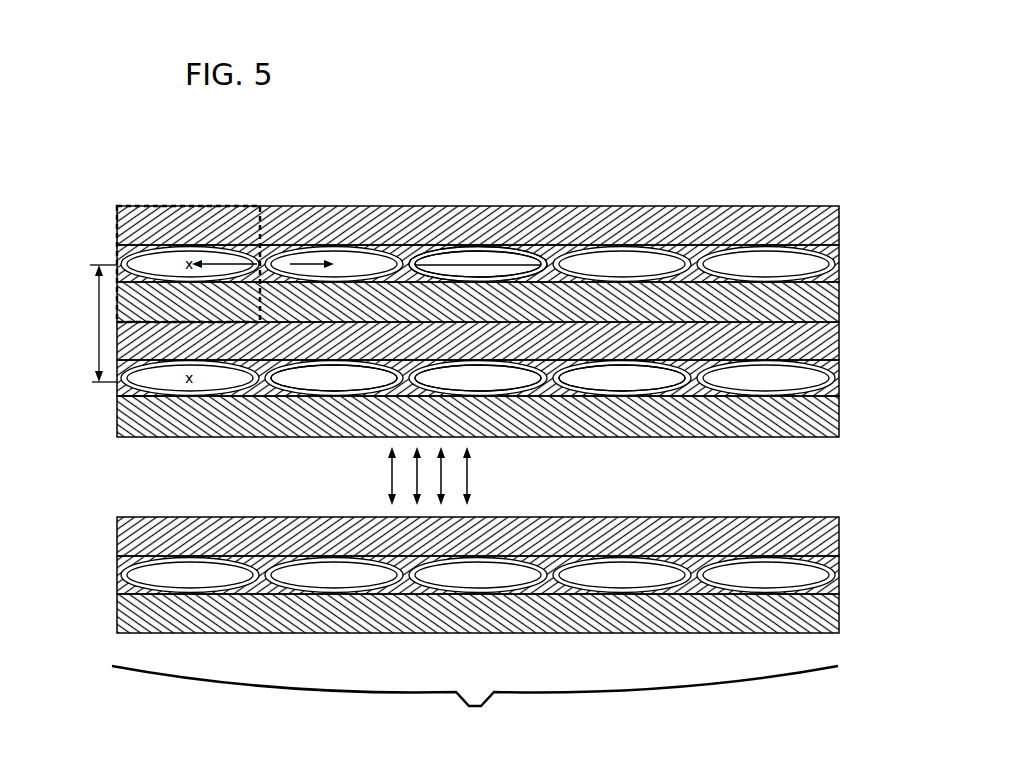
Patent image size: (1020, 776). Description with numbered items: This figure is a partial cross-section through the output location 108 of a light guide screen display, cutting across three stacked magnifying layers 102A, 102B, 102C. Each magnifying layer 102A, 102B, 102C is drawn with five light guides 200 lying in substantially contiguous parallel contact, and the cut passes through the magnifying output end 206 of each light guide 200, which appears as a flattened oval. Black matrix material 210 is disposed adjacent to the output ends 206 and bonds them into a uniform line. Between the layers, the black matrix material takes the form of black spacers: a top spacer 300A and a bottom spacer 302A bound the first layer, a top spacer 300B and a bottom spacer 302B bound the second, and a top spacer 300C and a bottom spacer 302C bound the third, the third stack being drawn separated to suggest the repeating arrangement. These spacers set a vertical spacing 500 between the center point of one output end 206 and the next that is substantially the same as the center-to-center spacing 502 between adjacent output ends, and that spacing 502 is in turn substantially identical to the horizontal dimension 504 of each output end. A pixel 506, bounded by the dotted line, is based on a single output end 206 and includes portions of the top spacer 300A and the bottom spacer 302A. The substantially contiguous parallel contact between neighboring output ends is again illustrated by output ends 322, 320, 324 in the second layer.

The output location 108 is at (475, 700).
The light guide 200 is at (428, 252).
The magnifying output end 206 is at (488, 256).
The black matrix material 210 is at (118, 395).
The top spacer 300A is at (843, 218).
The top spacer 300B is at (843, 344).
The top spacer 300C is at (843, 540).
The magnifying layer 102A is at (850, 257).
The magnifying layer 102B is at (850, 377).
The magnifying layer 102C is at (850, 572).
The bottom spacer 302A is at (843, 298).
The bottom spacer 302B is at (843, 417).
The bottom spacer 302C is at (843, 612).
The magnifying output end 320 is at (460, 388).
The magnifying output end 322 is at (316, 388).
The magnifying output end 324 is at (604, 388).
The vertical spacing 500 is at (97, 322).
The center-to-center spacing 502 is at (292, 262).
The horizontal dimension 504 is at (473, 265).
The pixel 506 is at (160, 206).